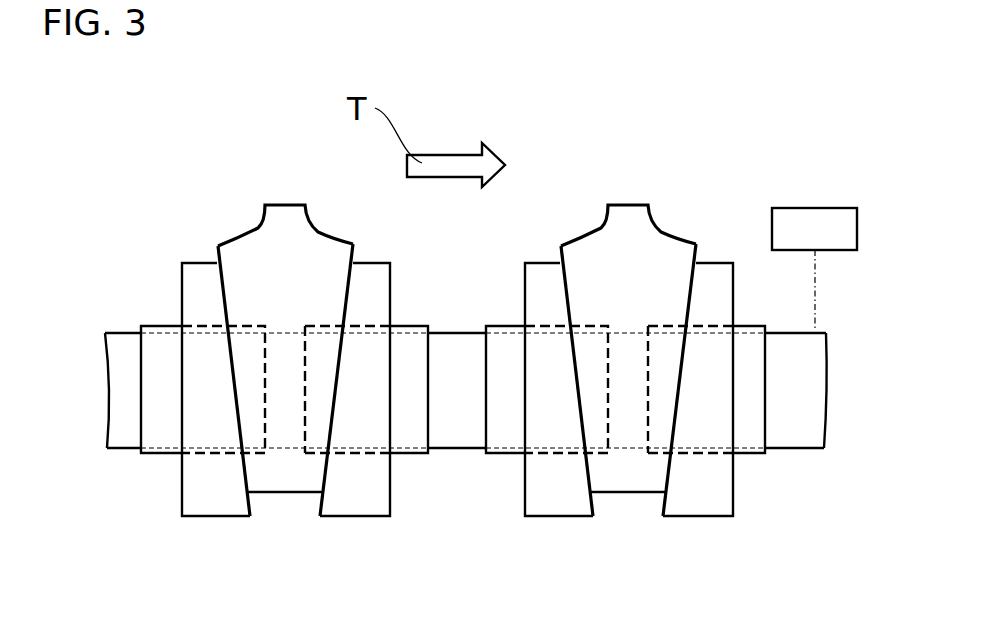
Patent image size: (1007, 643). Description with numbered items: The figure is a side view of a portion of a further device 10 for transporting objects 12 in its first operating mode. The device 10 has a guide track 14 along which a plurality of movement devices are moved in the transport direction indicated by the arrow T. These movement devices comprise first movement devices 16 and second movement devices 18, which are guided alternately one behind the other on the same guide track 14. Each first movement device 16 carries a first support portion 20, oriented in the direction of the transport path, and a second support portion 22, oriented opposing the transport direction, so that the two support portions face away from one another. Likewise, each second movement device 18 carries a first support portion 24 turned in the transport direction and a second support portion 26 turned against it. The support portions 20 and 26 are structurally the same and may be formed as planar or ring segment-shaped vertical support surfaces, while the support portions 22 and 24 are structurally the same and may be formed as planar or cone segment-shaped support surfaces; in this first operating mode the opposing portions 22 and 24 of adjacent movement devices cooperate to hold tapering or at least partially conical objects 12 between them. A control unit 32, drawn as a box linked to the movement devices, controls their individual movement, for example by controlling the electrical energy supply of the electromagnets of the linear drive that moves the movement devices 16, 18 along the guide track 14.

The device for transporting objects 10 is at (480, 62).
The object 12 is at (270, 245).
The guide track 14 is at (128, 353).
The first movement device 16 is at (400, 430).
The second movement device 18 is at (152, 436).
The first support portion 20 is at (390, 483).
The second support portion 22 is at (335, 417).
The first support portion 24 is at (242, 428).
The second support portion 26 is at (182, 293).
The control unit 32 is at (815, 210).